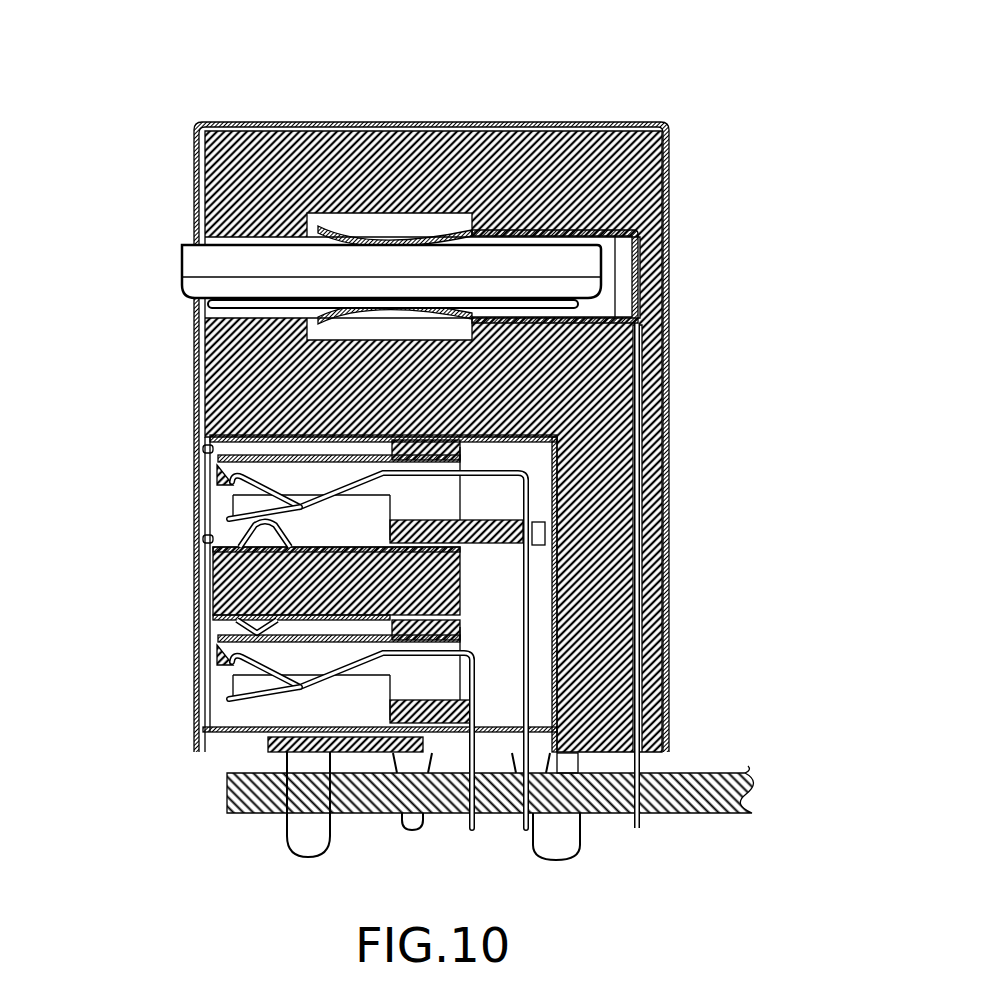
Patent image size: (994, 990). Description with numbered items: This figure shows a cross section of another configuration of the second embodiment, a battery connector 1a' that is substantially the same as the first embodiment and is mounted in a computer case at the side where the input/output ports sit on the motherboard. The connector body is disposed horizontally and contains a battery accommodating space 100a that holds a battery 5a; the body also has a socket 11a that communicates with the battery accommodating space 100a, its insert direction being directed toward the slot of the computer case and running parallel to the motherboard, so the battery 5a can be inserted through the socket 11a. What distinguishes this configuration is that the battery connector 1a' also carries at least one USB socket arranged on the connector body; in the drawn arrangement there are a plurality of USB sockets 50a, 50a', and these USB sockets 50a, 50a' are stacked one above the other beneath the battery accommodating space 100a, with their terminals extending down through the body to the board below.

The push switch 1a' is at (474, 430).
The socket 11a is at (192, 242).
The battery 5a is at (200, 263).
The battery accommodating space 100a is at (603, 297).
The USB socket 50a is at (306, 634).
The USB socket 50a' is at (269, 724).